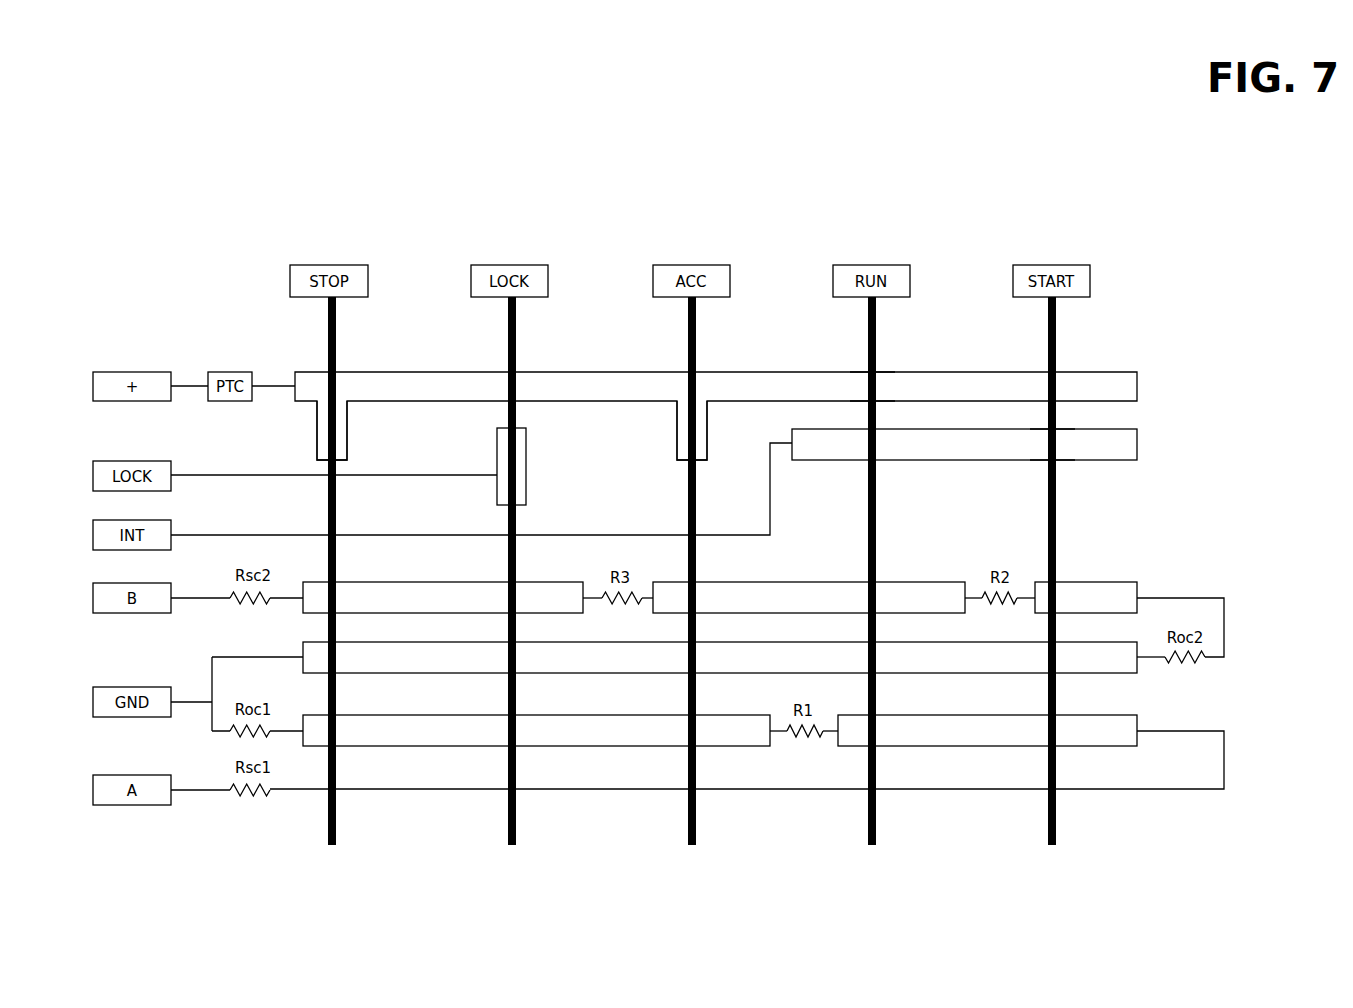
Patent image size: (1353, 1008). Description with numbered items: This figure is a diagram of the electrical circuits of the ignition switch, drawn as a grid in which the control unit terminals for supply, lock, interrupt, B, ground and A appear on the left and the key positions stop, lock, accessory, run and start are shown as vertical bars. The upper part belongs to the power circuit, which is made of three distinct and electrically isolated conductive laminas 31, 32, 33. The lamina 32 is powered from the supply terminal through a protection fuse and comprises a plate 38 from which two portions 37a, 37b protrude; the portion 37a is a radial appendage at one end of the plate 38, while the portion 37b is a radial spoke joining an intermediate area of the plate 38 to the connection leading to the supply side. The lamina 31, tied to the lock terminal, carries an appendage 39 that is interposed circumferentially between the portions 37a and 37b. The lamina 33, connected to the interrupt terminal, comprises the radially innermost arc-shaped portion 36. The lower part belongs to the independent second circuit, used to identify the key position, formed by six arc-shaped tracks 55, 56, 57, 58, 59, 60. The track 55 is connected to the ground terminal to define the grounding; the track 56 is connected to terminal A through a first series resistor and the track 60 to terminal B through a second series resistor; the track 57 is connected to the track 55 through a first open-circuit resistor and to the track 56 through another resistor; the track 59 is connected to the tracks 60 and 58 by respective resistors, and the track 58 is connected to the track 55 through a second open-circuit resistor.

The conductive lamina 31 is at (493, 452).
The conductive lamina 32 is at (622, 372).
The conductive lamina 33 is at (1002, 429).
The circular arc-shaped portion 36 is at (1073, 444).
The radial appendage portion 37a is at (317, 428).
The radial spoke portion 37b is at (707, 448).
The plate 38 is at (857, 387).
The appendage 39 is at (526, 475).
The conductive track 55 is at (1128, 665).
The conductive track 56 is at (1110, 730).
The conductive track 57 is at (742, 732).
The conductive track 58 is at (1127, 593).
The conductive track 59 is at (935, 592).
The conductive track 60 is at (322, 612).